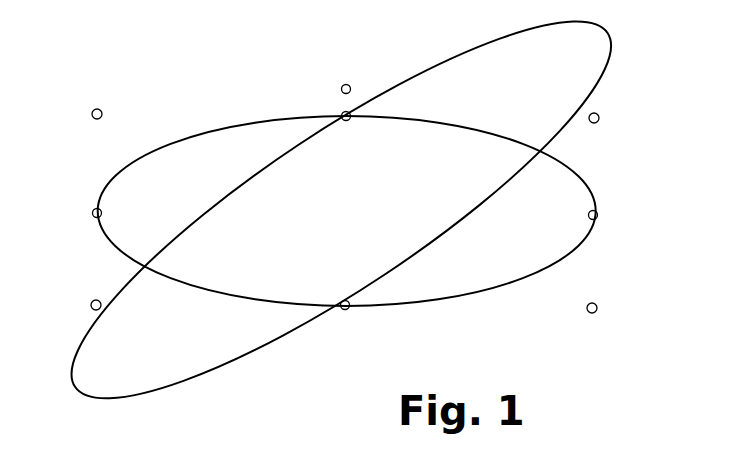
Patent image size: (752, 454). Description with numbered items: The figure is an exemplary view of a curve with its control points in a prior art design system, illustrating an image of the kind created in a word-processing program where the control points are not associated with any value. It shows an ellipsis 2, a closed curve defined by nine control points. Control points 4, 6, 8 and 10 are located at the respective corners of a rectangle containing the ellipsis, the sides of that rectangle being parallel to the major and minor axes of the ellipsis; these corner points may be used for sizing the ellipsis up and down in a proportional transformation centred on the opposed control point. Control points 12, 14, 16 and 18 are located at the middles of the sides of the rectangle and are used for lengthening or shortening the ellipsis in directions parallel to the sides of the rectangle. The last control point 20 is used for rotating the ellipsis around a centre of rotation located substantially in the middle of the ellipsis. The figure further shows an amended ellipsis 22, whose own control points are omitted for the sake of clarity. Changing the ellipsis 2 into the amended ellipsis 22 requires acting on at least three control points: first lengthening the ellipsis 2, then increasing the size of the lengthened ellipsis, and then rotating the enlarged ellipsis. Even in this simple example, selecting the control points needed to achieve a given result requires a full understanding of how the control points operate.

The ellipsis 2 is at (513, 283).
The amended ellipsis 22 is at (537, 25).
The control point 4 is at (92, 113).
The control point 6 is at (91, 305).
The control point 8 is at (599, 116).
The control point 10 is at (597, 307).
The control point 12 is at (342, 114).
The control point 14 is at (598, 214).
The control point 16 is at (347, 310).
The control point 18 is at (92, 213).
The control point 20 is at (346, 84).